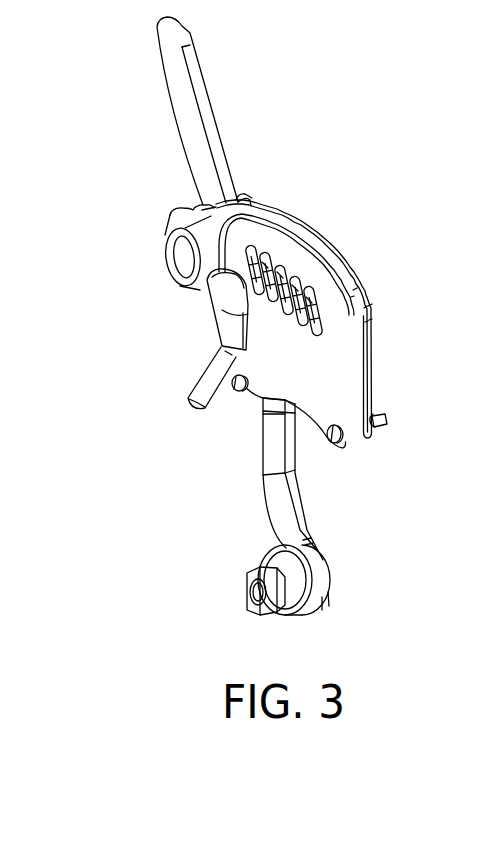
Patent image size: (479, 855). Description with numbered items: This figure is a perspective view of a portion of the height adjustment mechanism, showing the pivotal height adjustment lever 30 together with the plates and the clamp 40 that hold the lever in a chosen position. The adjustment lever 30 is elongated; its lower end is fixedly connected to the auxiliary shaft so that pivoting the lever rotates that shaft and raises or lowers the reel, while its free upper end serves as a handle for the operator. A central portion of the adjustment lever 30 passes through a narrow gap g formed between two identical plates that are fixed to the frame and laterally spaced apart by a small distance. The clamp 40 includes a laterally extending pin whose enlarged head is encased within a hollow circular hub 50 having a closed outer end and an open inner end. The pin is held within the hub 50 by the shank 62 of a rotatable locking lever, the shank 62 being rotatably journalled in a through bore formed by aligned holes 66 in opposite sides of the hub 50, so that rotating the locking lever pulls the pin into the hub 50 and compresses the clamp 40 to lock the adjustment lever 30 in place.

The height adjustment lever 30 is at (203, 100).
The shank 62 is at (220, 270).
The hollow circular hub 50 is at (175, 256).
The holes 66 is at (214, 270).
The clamp 40 is at (165, 403).
The gap g is at (367, 389).